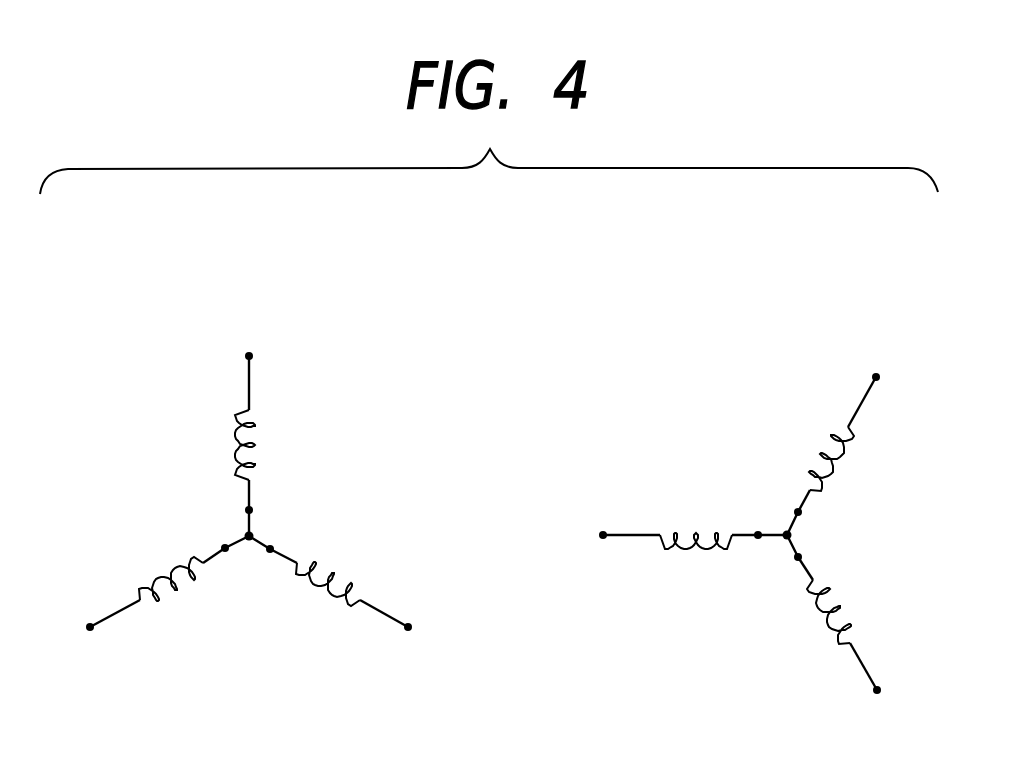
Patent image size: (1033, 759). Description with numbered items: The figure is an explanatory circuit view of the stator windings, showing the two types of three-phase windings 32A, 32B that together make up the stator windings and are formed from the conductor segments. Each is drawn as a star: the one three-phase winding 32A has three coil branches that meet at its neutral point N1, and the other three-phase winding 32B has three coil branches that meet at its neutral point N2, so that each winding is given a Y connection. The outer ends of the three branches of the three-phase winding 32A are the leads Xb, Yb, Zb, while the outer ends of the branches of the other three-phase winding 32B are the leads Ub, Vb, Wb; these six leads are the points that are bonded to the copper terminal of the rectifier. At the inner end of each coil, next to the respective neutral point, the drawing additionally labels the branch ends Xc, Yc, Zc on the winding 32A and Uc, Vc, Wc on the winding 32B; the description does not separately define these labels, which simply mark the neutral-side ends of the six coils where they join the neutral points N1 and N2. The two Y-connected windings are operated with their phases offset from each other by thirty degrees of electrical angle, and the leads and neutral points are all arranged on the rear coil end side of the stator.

The three-phase winding 32A is at (344, 335).
The three-phase winding 32B is at (787, 368).
The neutral point N1 is at (267, 518).
The neutral point N2 is at (811, 534).
The lead Xb is at (247, 399).
The X-phase winding neutral-side node Xc is at (249, 510).
The lead Yb is at (122, 604).
The Y-phase winding neutral-side node Yc is at (225, 548).
The lead Zb is at (374, 606).
The Z-phase winding neutral-side node Zc is at (272, 549).
The lead Ub is at (853, 415).
The U-phase winding neutral-side node Uc is at (798, 512).
The lead Vb is at (643, 535).
The V-phase winding neutral-side node Vc is at (758, 535).
The lead Wb is at (858, 657).
The W-phase winding neutral-side node Wc is at (798, 557).